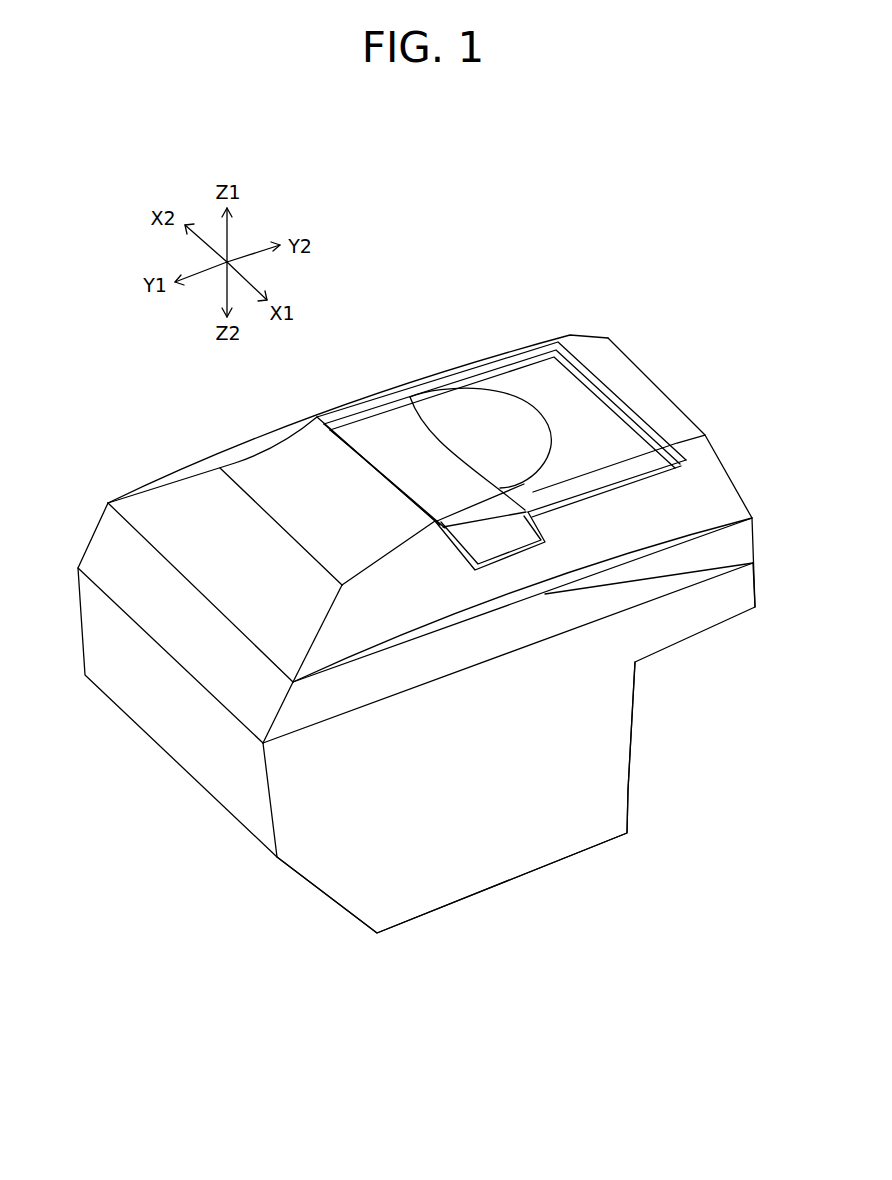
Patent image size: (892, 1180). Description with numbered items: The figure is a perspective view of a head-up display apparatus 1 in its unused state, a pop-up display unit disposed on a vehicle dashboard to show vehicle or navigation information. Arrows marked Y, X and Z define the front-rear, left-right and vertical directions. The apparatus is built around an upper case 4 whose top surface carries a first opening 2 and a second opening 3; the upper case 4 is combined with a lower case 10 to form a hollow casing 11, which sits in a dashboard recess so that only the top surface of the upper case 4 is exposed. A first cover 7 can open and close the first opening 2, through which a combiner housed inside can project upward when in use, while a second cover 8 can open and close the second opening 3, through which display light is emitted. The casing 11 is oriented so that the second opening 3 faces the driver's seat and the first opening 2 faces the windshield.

The head-up display apparatus 1 is at (580, 297).
The first opening 2 is at (355, 468).
The second opening 3 is at (643, 481).
The upper case 4 is at (600, 595).
The first cover 7 is at (381, 433).
The second cover 8 is at (538, 377).
The lower case 10 is at (565, 758).
The casing 11 is at (722, 693).